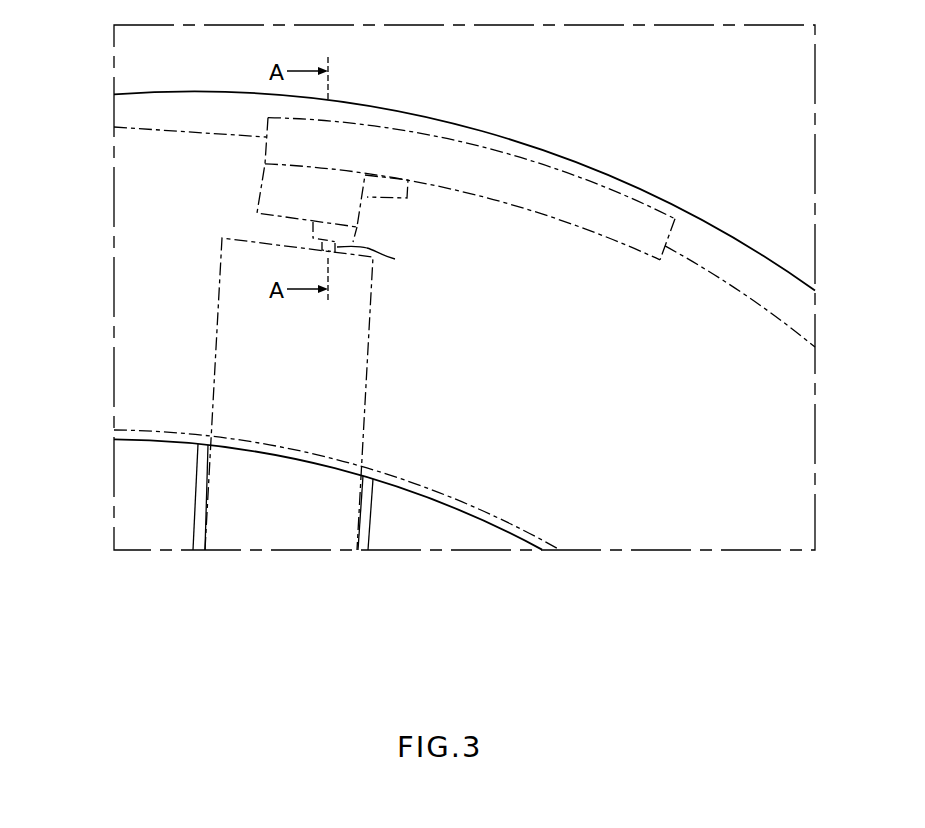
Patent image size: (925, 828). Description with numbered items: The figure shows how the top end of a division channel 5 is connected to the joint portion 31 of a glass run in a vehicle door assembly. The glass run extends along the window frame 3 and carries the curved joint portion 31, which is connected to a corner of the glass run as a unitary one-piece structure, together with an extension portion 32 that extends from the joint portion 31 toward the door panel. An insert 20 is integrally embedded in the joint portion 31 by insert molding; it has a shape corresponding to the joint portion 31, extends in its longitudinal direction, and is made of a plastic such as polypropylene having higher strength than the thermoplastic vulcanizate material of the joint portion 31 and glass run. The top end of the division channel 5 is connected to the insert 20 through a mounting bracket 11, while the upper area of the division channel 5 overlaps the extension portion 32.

The window frame 3 is at (708, 270).
The joint portion 31 is at (612, 176).
The extension portion 32 is at (193, 497).
The division channel 5 is at (203, 525).
The insert 20 is at (527, 159).
The mounting bracket 11 is at (396, 260).